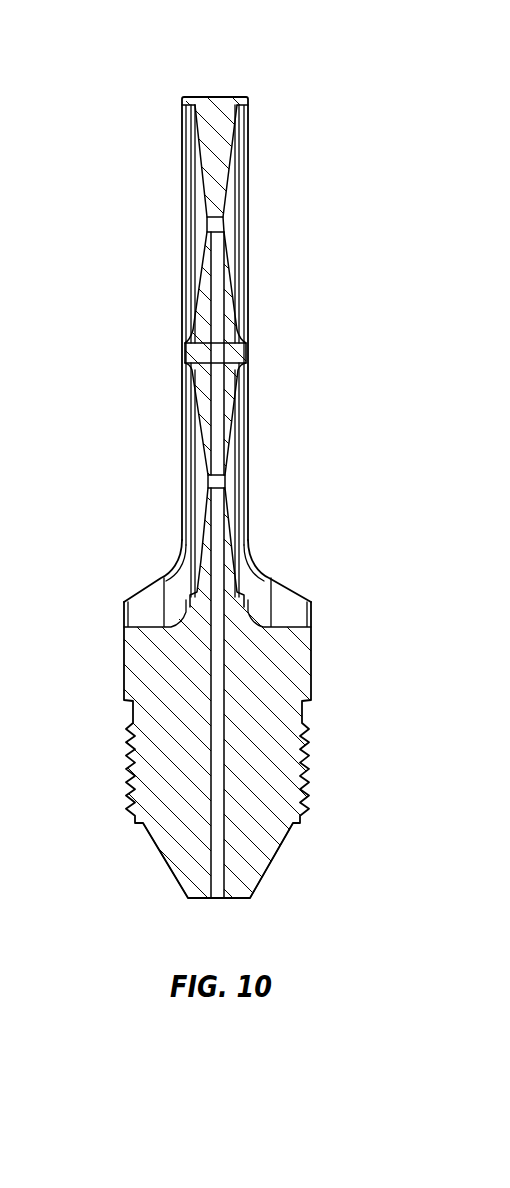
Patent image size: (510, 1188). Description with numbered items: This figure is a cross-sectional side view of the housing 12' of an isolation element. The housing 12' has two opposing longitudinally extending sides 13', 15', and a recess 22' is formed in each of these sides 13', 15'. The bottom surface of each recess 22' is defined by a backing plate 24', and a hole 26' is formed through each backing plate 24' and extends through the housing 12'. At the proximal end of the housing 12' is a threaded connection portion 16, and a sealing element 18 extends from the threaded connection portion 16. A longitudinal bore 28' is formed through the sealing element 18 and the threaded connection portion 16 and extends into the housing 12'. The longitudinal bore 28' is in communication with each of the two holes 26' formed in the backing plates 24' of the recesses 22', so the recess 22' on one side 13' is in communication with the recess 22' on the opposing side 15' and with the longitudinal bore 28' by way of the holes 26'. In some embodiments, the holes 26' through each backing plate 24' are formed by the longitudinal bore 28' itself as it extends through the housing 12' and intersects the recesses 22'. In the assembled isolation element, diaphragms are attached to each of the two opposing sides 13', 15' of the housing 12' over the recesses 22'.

The housing 12' is at (255, 485).
The longitudinally extending side 13' is at (215, 331).
The longitudinally extending side 15' is at (260, 79).
The recess 22' is at (226, 351).
The backing plate 24' is at (221, 356).
The hole 26' is at (222, 354).
The longitudinal bore 28' is at (140, 565).
The threaded connection portion 16 is at (312, 762).
The sealing element 18 is at (278, 855).